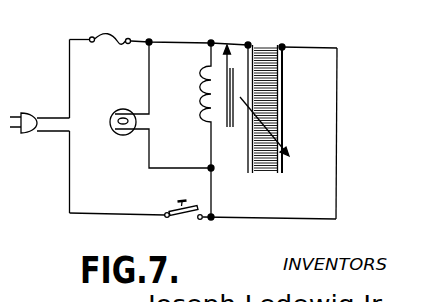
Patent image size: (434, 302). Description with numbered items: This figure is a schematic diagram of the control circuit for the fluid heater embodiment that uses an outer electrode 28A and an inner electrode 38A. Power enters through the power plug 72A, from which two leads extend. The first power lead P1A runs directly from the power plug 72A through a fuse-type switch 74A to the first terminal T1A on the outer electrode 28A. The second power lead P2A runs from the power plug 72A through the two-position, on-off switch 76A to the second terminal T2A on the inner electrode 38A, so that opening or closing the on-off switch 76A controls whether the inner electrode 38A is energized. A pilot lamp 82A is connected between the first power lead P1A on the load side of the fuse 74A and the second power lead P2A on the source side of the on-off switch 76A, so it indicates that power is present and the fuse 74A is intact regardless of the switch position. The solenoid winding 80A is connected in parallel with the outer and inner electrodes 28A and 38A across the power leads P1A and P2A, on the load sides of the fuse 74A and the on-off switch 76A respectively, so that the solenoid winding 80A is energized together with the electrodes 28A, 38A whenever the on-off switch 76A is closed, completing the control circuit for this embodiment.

The first power lead P1A is at (70, 41).
The second power lead P2A is at (68, 201).
The power plug 72A is at (24, 134).
The fuse-type switch 74A is at (119, 46).
The pilot lamp 82A is at (126, 109).
The solenoid winding 80A is at (203, 118).
The first terminal T1A is at (249, 43).
The second terminal T2A is at (280, 44).
The outer electrode 28A is at (247, 157).
The inner electrode 38A is at (283, 137).
The two-position, on-off switch 76A is at (182, 216).